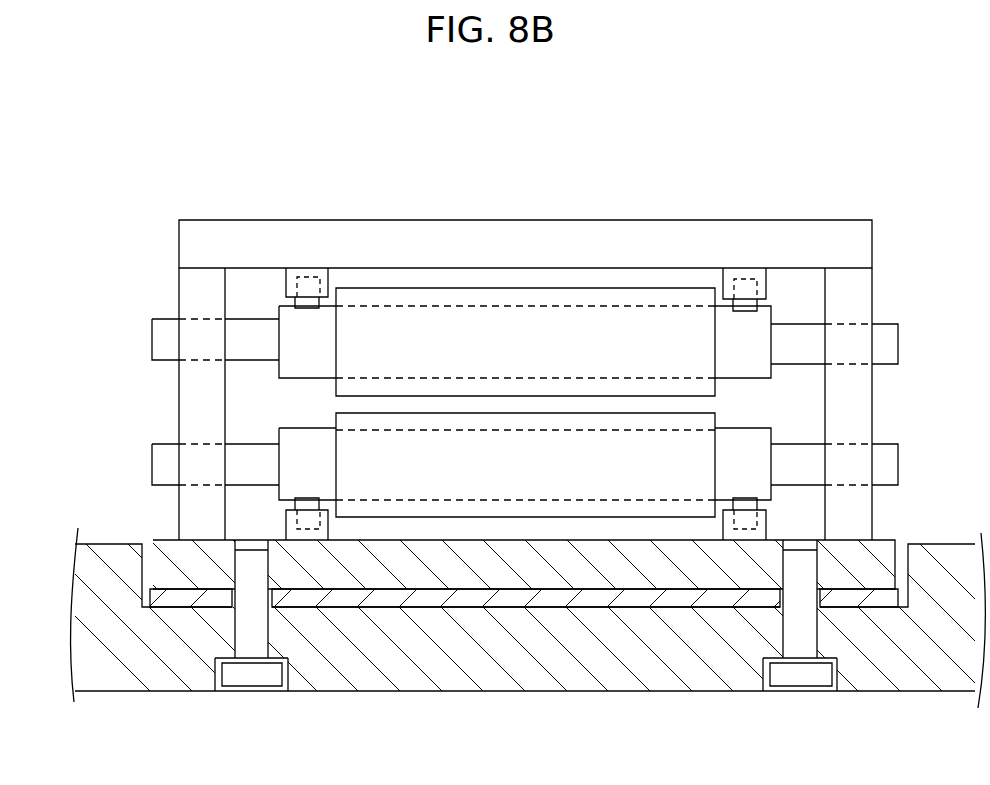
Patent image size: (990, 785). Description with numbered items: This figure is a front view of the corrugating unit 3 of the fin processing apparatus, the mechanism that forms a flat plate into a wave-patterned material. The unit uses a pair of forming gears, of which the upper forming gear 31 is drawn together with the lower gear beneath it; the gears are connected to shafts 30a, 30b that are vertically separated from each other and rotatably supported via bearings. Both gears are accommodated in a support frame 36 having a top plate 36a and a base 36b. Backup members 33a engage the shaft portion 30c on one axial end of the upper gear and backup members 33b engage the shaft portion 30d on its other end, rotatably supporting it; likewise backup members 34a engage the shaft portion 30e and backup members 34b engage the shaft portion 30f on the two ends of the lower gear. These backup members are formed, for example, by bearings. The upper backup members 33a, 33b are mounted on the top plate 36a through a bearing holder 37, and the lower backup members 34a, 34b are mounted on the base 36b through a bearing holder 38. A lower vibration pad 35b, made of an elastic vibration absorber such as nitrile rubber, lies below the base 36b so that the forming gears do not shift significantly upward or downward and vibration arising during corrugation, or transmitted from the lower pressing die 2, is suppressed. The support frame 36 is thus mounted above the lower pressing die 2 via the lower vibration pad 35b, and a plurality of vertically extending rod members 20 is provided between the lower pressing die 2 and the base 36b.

The lower pressing die 2 is at (550, 672).
The corrugating unit 3 is at (562, 168).
The rod member 20 is at (253, 643).
The shaft 30a is at (163, 337).
The shaft 30b is at (163, 462).
The shaft portion 30c is at (287, 371).
The shaft portion 30d is at (765, 373).
The shaft portion 30e is at (287, 492).
The shaft portion 30f is at (765, 495).
The forming gear 31 is at (450, 300).
The backup member 33a is at (317, 275).
The backup member 33b is at (750, 280).
The backup member 34a is at (305, 528).
The backup member 34b is at (745, 530).
The lower vibration pad 35b is at (470, 598).
The support frame 36 is at (565, 332).
The top plate 36a is at (866, 238).
The base 36b is at (885, 548).
The bearing holder 37 is at (295, 268).
The bearing holder 38 is at (320, 540).